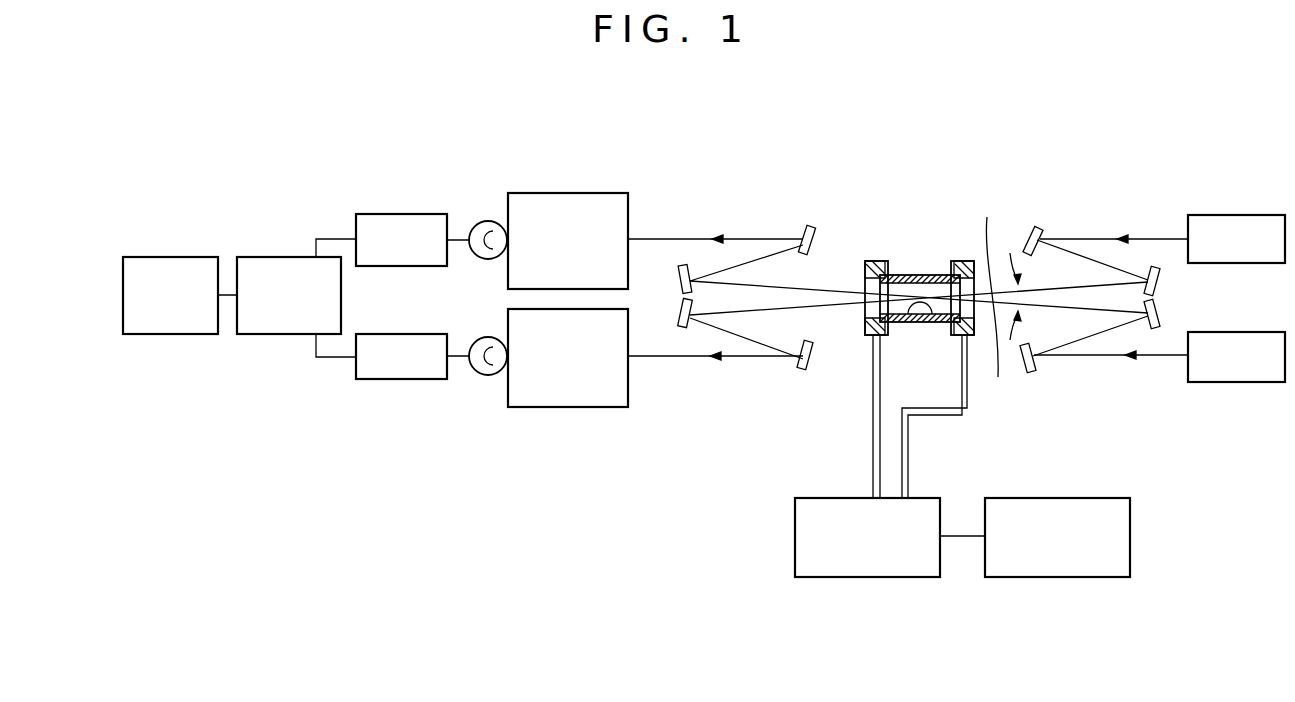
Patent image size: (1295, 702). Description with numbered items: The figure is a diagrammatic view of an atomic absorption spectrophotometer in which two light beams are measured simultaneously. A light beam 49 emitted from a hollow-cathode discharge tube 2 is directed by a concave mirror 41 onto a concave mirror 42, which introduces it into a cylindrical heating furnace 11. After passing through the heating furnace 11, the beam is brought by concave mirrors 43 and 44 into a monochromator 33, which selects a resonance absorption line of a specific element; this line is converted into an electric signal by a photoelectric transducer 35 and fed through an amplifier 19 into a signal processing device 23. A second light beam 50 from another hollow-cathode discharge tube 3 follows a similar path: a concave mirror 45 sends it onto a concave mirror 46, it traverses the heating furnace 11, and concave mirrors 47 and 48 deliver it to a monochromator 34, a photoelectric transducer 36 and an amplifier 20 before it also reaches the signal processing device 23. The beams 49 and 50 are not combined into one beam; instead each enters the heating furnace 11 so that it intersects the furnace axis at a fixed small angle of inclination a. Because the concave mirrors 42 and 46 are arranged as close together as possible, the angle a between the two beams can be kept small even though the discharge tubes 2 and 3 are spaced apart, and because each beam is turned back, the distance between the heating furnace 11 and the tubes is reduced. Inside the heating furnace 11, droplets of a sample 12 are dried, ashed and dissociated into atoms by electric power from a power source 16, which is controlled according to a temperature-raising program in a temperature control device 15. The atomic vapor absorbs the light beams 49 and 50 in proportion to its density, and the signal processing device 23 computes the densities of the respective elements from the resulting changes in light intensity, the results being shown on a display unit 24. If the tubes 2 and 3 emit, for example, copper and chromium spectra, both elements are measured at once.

The hollow-cathode discharge tube 2 is at (1212, 215).
The hollow-cathode discharge tube 3 is at (1233, 383).
The cylindrical heating furnace 11 is at (900, 273).
The sample 12 is at (921, 300).
The temperature control device 15 is at (1058, 578).
The power source 16 is at (857, 578).
The amplifier 19 is at (381, 380).
The amplifier 20 is at (411, 213).
The signal processing device 23 is at (280, 257).
The display unit 24 is at (203, 257).
The monochromator 33 is at (574, 407).
The monochromator 34 is at (567, 193).
The photoelectric transducer 35 is at (487, 375).
The photoelectric transducer 36 is at (482, 221).
The concave mirror 41 is at (1035, 227).
The concave mirror 42 is at (1155, 268).
The concave mirror 43 is at (803, 370).
The concave mirror 44 is at (683, 327).
The concave mirror 45 is at (1036, 369).
The concave mirror 46 is at (1153, 328).
The concave mirror 47 is at (806, 226).
The concave mirror 48 is at (680, 272).
The light beam 49 is at (987, 282).
The light beam 50 is at (1004, 363).
The angle of inclination a is at (1023, 297).